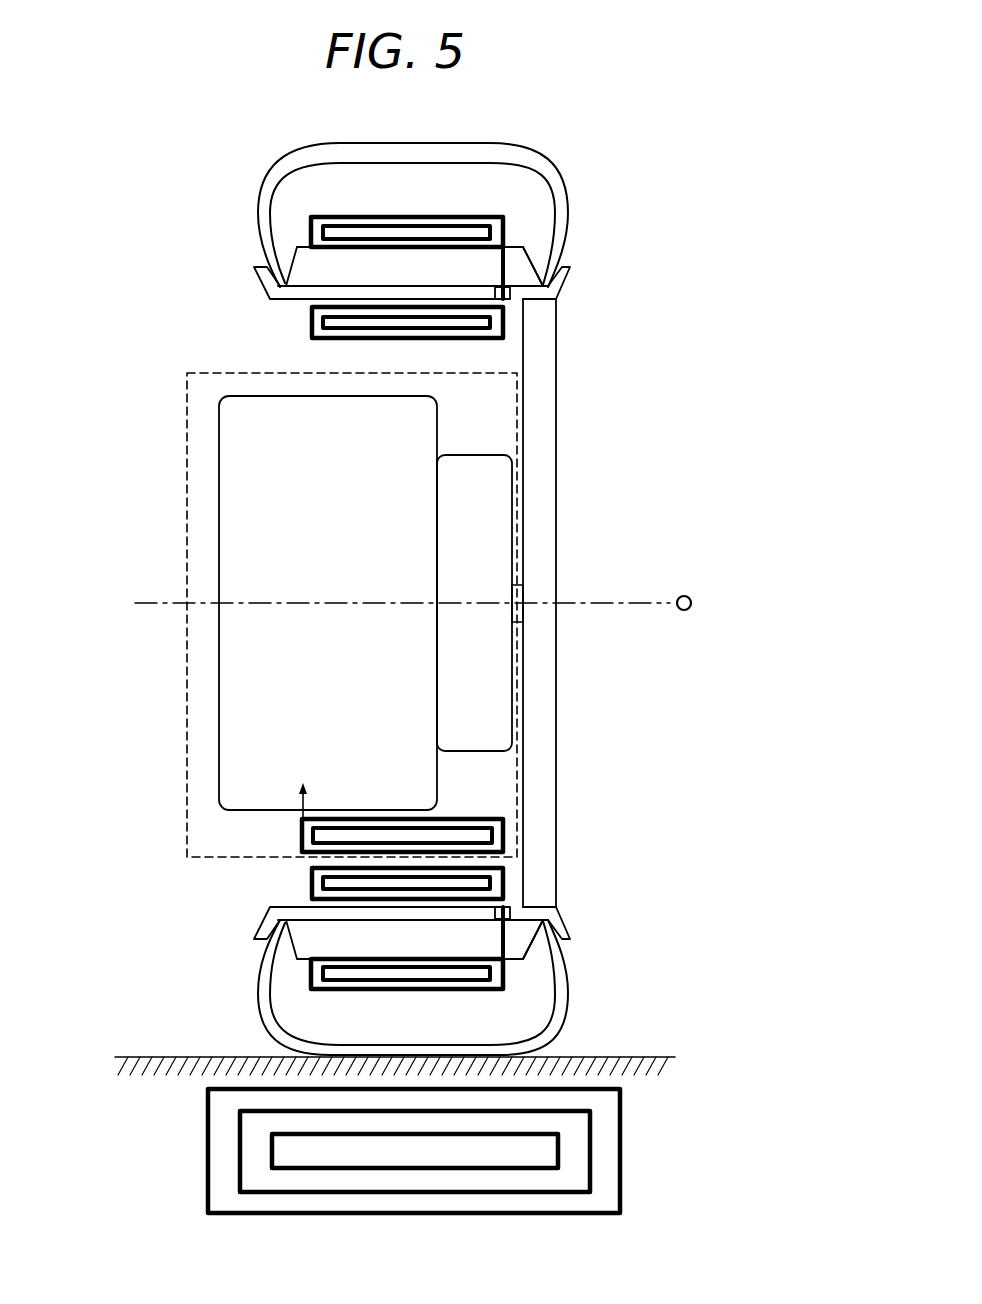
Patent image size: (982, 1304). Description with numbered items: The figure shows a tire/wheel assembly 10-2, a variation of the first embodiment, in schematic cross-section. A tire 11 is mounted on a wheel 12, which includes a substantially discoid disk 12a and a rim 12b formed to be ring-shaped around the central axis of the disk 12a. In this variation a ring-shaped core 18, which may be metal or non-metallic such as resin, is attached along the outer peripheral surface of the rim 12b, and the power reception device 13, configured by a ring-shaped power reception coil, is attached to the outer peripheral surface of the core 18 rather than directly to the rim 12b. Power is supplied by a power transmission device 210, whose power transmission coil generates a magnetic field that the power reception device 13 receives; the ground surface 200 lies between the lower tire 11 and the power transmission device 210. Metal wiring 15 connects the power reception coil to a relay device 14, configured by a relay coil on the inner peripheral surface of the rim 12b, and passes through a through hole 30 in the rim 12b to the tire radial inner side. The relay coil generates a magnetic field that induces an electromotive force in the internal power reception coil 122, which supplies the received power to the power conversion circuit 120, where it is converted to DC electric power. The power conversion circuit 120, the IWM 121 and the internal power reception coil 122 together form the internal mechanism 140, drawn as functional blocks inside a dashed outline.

The tire/wheel assembly 10-2 is at (650, 216).
The tire 11 is at (541, 158).
The wheel 12 is at (560, 495).
The disk 12a is at (543, 408).
The rim 12b is at (318, 292).
The power reception device 13 is at (403, 217).
The relay device 14 is at (312, 322).
The metal wiring 15 is at (510, 292).
The core 18 is at (527, 255).
The through hole 30 is at (508, 300).
The power conversion circuit 120 is at (262, 682).
The IWM 121 is at (487, 692).
The internal power reception coil 122 is at (302, 832).
The internal mechanism 140 is at (187, 455).
The road surface 200 is at (605, 1056).
The power transmission device 210 is at (208, 1146).